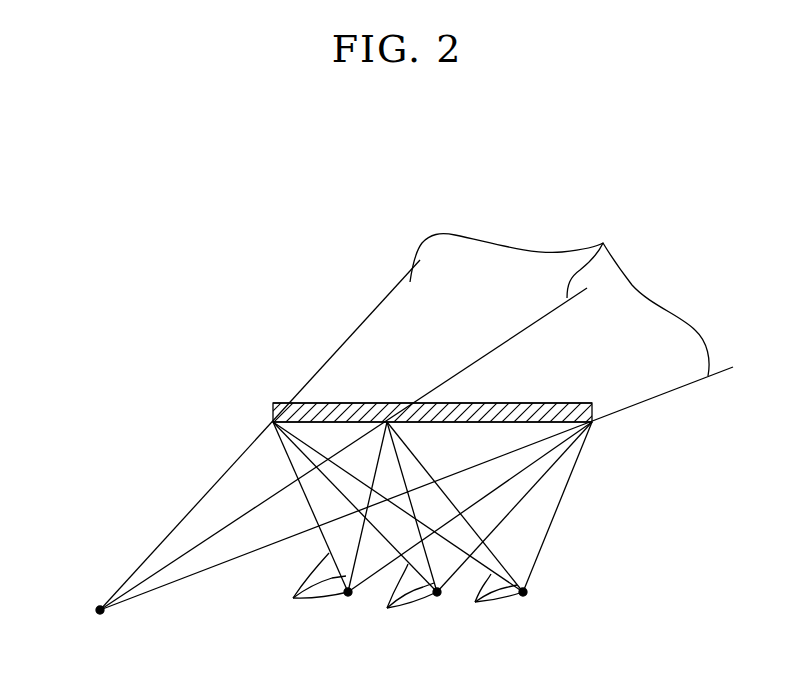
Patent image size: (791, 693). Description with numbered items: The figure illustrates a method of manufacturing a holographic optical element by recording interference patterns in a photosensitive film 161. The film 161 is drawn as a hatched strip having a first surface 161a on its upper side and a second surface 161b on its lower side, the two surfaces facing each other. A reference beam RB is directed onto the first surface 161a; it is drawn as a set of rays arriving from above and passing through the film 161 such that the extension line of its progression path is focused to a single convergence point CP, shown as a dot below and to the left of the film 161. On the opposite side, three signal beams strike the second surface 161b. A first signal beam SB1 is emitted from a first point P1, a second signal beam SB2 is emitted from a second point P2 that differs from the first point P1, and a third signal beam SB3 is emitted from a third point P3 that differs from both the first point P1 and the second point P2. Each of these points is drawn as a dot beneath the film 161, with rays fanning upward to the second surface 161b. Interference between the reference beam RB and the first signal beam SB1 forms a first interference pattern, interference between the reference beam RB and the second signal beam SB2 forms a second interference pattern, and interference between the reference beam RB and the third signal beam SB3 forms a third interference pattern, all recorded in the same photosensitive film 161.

The photosensitive film 161 is at (272, 419).
The first surface 161a is at (567, 403).
The second surface 161b is at (586, 434).
The reference beam RB is at (559, 297).
The convergence point CP is at (100, 614).
The first point P1 is at (340, 606).
The second point P2 is at (435, 596).
The third point P3 is at (524, 598).
The first signal beam SB1 is at (296, 584).
The second signal beam SB2 is at (389, 596).
The third signal beam SB3 is at (482, 601).